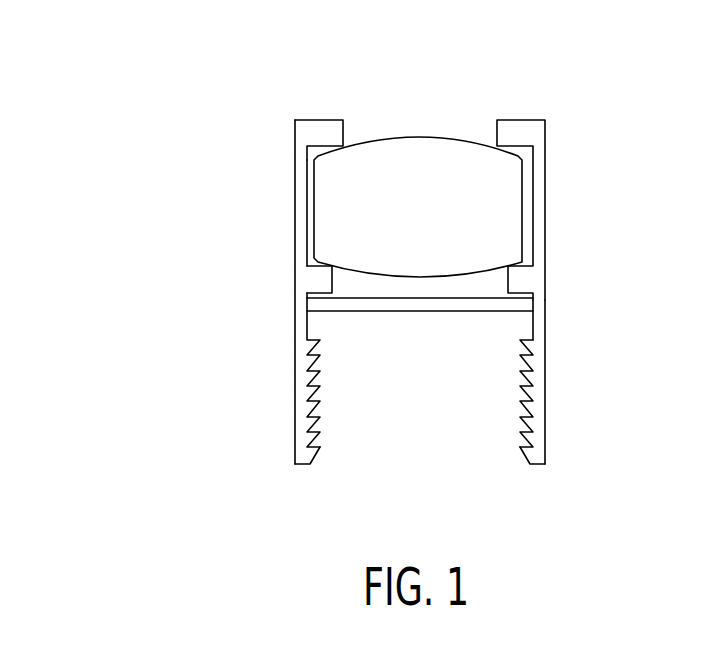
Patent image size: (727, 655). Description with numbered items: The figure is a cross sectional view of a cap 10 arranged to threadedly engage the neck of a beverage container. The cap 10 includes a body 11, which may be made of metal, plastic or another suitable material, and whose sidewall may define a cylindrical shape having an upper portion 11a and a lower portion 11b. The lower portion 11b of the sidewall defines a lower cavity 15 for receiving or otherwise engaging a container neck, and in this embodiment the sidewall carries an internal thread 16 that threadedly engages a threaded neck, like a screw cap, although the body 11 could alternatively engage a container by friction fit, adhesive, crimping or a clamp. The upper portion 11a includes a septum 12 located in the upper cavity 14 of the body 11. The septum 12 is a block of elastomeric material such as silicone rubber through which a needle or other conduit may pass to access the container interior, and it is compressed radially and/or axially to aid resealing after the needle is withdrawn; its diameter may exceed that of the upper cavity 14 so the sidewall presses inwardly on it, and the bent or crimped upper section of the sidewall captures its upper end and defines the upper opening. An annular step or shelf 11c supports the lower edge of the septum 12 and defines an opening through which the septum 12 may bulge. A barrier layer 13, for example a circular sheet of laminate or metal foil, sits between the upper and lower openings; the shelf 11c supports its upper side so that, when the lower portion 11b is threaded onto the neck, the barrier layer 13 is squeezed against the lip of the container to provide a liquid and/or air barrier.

The cap 10 is at (140, 78).
The body 11 is at (294, 242).
The upper portion 11a is at (541, 156).
The lower portion 11b is at (540, 378).
The annular step or shelf 11c is at (302, 287).
The septum 12 is at (436, 162).
The barrier layer 13 is at (447, 303).
The upper cavity 14 is at (355, 134).
The lower cavity 15 is at (333, 456).
The internal thread 16 is at (522, 437).